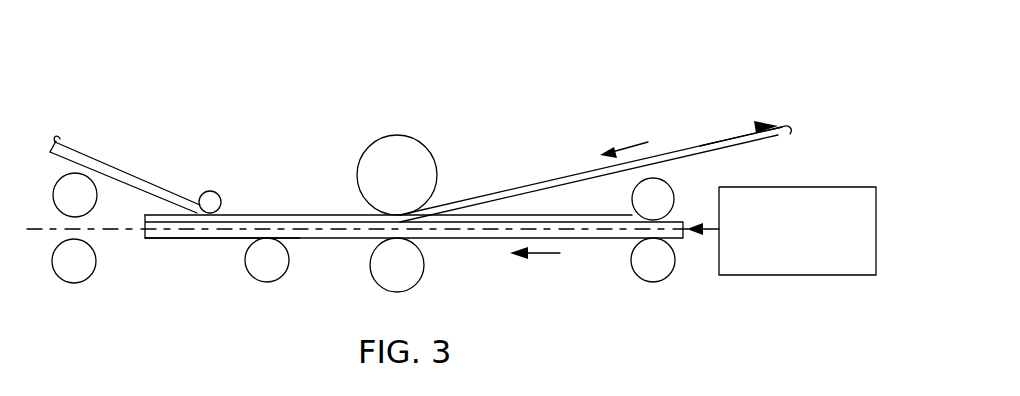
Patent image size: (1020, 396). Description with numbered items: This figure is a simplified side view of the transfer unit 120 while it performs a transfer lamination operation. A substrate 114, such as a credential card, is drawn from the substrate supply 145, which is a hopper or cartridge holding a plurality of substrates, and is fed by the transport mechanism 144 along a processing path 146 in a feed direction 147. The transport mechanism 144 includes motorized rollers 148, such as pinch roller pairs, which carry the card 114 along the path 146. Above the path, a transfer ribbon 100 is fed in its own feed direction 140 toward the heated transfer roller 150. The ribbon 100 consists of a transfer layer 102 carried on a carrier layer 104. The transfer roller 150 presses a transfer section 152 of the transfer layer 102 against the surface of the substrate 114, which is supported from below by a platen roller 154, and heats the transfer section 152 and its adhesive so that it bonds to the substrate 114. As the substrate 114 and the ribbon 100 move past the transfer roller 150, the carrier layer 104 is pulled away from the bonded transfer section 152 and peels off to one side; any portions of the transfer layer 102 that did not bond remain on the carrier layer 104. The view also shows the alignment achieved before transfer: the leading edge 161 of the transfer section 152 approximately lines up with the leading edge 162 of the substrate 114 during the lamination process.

The transfer ribbon 100 is at (718, 141).
The transfer layer 102 is at (553, 187).
The carrier layer 104 is at (72, 153).
The substrate 114 is at (330, 239).
The transfer unit 120 is at (138, 31).
The feed direction 140 is at (632, 147).
The transport mechanism 144 is at (718, 328).
The substrate supply 145 is at (800, 187).
The processing path 146 is at (50, 228).
The feed direction 147 is at (541, 254).
The motorized rollers 148 is at (76, 278).
The heated transfer roller 150 is at (398, 138).
The transfer section 152 is at (167, 223).
The platen roller 154 is at (407, 276).
The leading edge of the transfer section 161 is at (143, 214).
The leading edge of the substrate 162 is at (143, 236).